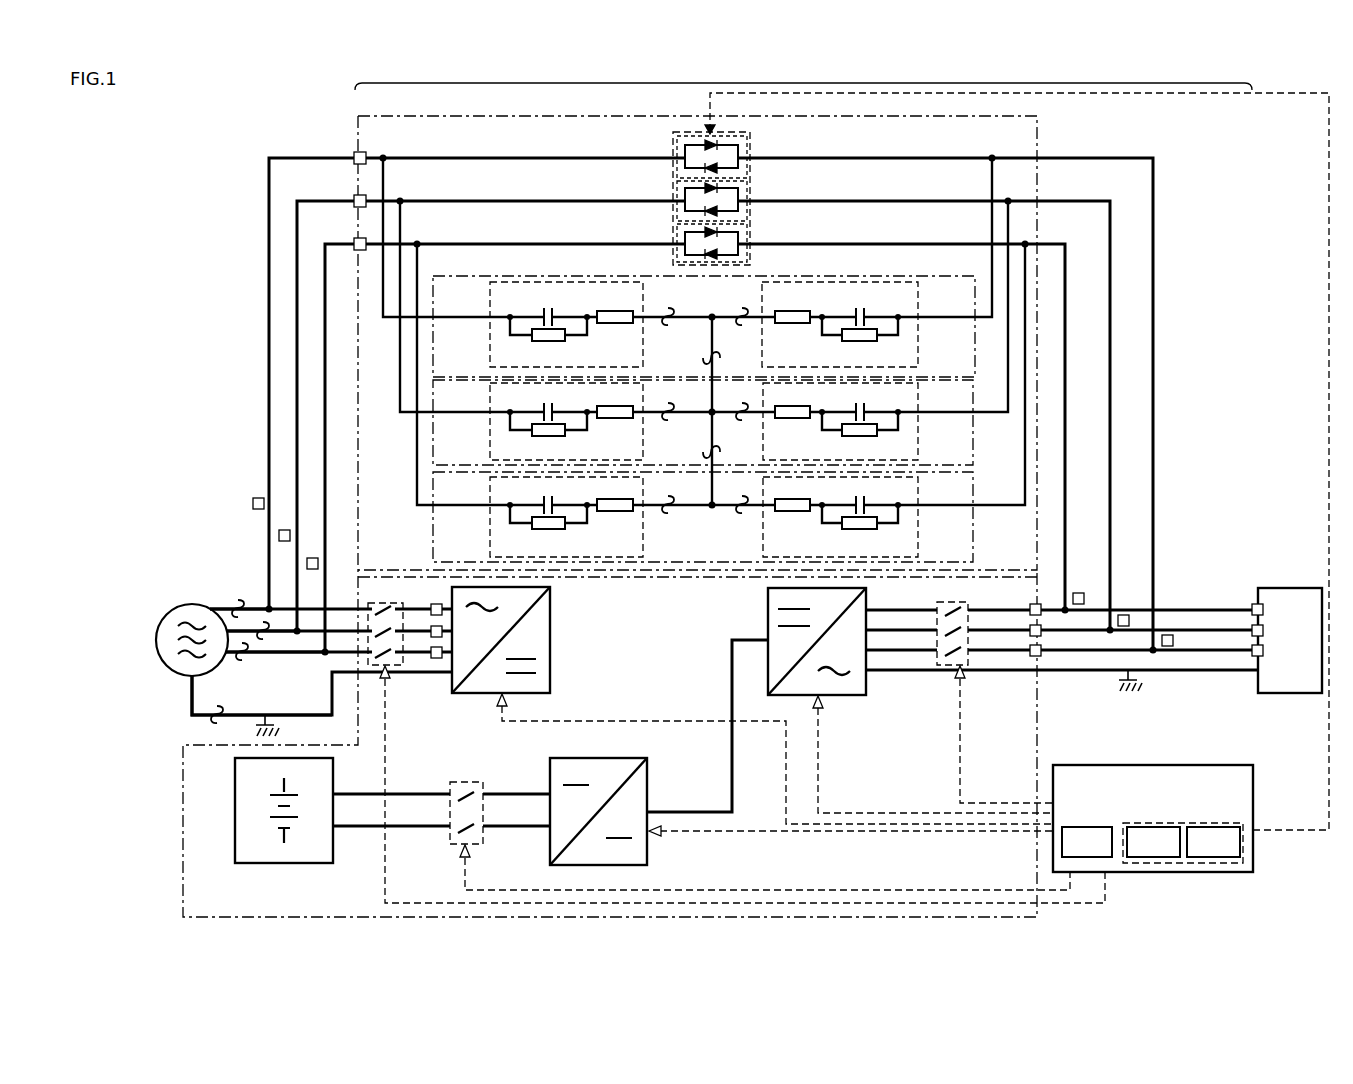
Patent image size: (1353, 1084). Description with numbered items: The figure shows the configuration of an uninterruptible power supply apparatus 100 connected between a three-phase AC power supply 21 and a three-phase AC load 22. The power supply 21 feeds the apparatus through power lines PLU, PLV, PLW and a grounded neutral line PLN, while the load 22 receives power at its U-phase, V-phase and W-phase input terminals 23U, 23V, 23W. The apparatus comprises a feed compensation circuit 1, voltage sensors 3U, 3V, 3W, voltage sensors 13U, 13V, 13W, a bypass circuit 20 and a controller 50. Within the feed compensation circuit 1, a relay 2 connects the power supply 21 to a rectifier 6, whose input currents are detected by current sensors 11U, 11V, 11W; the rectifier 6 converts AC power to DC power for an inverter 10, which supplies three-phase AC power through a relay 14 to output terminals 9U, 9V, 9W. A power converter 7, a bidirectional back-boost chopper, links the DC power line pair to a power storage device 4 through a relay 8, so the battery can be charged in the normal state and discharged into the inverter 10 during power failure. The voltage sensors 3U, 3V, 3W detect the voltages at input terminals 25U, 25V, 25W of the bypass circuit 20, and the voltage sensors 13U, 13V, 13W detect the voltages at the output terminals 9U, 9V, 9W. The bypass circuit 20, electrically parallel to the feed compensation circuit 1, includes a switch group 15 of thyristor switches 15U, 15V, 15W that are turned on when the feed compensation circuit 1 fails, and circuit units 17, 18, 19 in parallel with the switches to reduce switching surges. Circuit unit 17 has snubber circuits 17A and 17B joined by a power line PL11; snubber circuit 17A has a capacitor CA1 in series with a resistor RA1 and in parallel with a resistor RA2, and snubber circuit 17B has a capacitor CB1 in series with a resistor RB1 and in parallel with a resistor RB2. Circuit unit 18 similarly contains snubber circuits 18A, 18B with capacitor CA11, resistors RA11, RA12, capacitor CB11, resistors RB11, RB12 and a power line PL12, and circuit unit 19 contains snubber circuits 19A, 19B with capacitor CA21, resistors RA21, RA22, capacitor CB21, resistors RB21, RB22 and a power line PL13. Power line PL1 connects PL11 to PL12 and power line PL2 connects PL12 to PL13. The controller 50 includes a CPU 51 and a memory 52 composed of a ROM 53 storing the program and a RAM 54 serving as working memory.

The feed compensation circuit 1 is at (618, 917).
The relay 2 is at (736, 741).
The voltage sensor 3U is at (253, 504).
The voltage sensor 3V is at (279, 535).
The voltage sensor 3W is at (318, 563).
The power storage device 4 is at (235, 810).
The rectifier 6 is at (550, 613).
The power converter 7 is at (612, 865).
The relay 8 is at (474, 782).
The output terminal 9U is at (1030, 646).
The output terminal 9V is at (1030, 626).
The output terminal 9W is at (1031, 605).
The inverter 10 is at (866, 596).
The current sensor 11U is at (437, 604).
The current sensor 11V is at (434, 637).
The current sensor 11W is at (436, 658).
The voltage sensor 13U is at (1078, 592).
The voltage sensor 13V is at (1124, 614).
The voltage sensor 13W is at (1168, 634).
The relay 14 is at (960, 602).
The switch group 15 is at (718, 198).
The switch 15U is at (750, 149).
The switch 15V is at (750, 192).
The switch 15W is at (750, 235).
The circuit unit 17 is at (711, 331).
The snubber circuit 17A is at (918, 303).
The snubber circuit 17B is at (490, 303).
The circuit unit 18 is at (722, 442).
The snubber circuit 18A is at (918, 438).
The snubber circuit 18B is at (490, 396).
The circuit unit 19 is at (723, 517).
The snubber circuit 19A is at (918, 546).
The snubber circuit 19B is at (490, 546).
The bypass circuit 20 is at (1037, 154).
The power supply 21 is at (156, 642).
The load 22 is at (1287, 588).
The U-phase input terminal 23U is at (1252, 647).
The V-phase input terminal 23V is at (1252, 627).
The W-phase input terminal 23W is at (1252, 607).
The input terminal 25U is at (357, 150).
The input terminal 25V is at (355, 194).
The input terminal 25W is at (357, 237).
The controller 50 is at (1153, 833).
The CPU 51 is at (1080, 827).
The memory 52 is at (1186, 821).
The ROM 53 is at (1147, 827).
The RAM 54 is at (1210, 827).
The uninterruptible power supply apparatus 100 is at (840, 83).
The capacitor CB1 is at (549, 305).
The resistor RB1 is at (613, 330).
The resistor RB2 is at (548, 341).
The power line PL11 is at (732, 296).
The power line PL1 is at (718, 356).
The resistor RA1 is at (790, 330).
The capacitor CA1 is at (861, 305).
The resistor RA2 is at (860, 341).
The capacitor CB11 is at (550, 400).
The resistor RB11 is at (618, 425).
The resistor RB12 is at (548, 436).
The power line PL12 is at (732, 403).
The power line PL2 is at (720, 451).
The resistor RA11 is at (792, 425).
The capacitor CA11 is at (864, 400).
The resistor RA12 is at (860, 436).
The capacitor CB21 is at (550, 494).
The resistor RB21 is at (618, 518).
The resistor RB22 is at (548, 530).
The power line PL13 is at (728, 526).
The resistor RA21 is at (792, 518).
The capacitor CA21 is at (864, 494).
The resistor RA22 is at (860, 530).
The power line PLU is at (236, 602).
The power line PLV is at (268, 640).
The power line PLW is at (243, 660).
The neutral line PLN is at (212, 728).